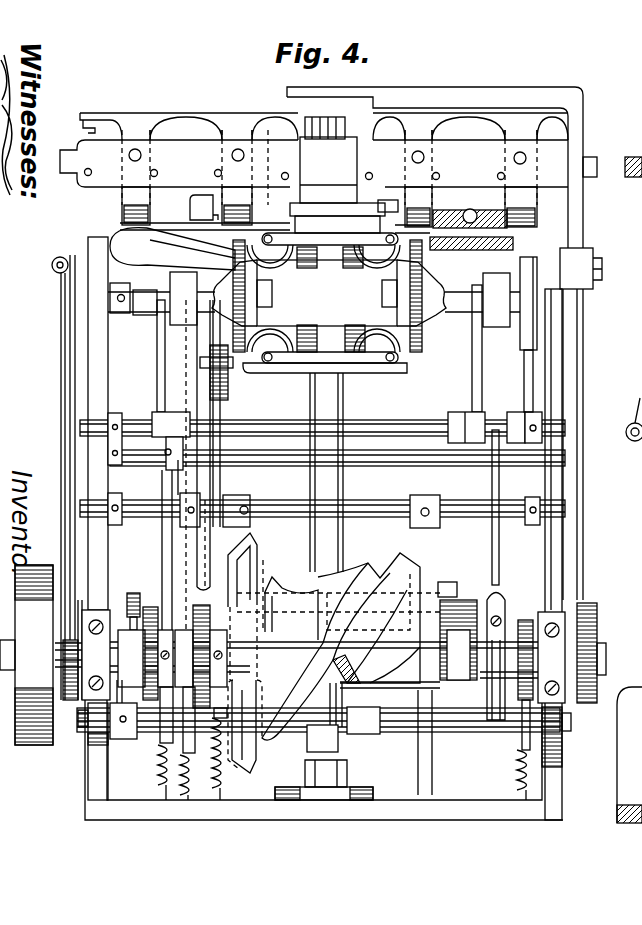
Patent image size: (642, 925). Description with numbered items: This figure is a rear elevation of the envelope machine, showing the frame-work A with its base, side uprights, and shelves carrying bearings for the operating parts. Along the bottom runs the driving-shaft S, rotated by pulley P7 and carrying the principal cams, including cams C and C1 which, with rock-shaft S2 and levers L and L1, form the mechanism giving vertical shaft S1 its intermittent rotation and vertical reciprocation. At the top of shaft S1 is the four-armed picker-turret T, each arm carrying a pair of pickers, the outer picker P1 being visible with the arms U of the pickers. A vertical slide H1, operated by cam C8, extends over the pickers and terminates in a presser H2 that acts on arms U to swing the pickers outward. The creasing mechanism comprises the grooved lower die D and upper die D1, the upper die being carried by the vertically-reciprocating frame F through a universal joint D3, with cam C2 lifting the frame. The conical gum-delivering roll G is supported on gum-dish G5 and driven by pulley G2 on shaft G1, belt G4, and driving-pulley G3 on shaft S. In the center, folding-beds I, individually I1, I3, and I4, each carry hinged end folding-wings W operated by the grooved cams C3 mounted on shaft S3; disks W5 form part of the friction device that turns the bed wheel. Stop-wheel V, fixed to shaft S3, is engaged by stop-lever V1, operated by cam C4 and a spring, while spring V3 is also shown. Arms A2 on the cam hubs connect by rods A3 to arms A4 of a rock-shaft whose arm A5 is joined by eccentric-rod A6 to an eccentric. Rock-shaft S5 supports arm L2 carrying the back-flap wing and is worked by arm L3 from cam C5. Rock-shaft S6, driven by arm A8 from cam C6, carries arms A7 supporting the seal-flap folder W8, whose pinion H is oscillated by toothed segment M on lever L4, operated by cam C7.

The vertical slide H1 is at (583, 103).
The presser H2 is at (283, 100).
The arms of the pickers U is at (205, 110).
The upper die D1 is at (510, 215).
The picker-turret T is at (314, 175).
The end folding-wing W is at (314, 238).
The outer picker P1 is at (337, 207).
The vertically-reciprocating frame F is at (323, 397).
The universal joint D3 is at (470, 210).
The lower die D is at (515, 243).
The folding-bed I1 is at (330, 237).
The folding-bed I3 is at (451, 358).
The folding-bed I4 is at (323, 298).
The disks W5 is at (305, 330).
The toothed segment M is at (243, 415).
The cams C3 is at (233, 328).
The arm L2 is at (325, 467).
The oscillating seal-flap folder W8 is at (403, 373).
The pinion H is at (228, 368).
The gum-delivering roll G is at (172, 249).
The gum-dish G5 is at (125, 273).
The pulley G2 is at (55, 260).
The shaft of the gum roll G1 is at (56, 270).
The belt G4 is at (68, 390).
The driving-pulley G3 is at (73, 702).
The frame-work A is at (357, 529).
The rock-shaft S5 is at (80, 428).
The lever L4 is at (222, 482).
The rock-shaft S6 is at (82, 512).
The arms A7 is at (178, 486).
The intermittently-rotating shaft S3 is at (85, 298).
The arms A2 is at (406, 299).
The rods A3 is at (157, 356).
The arms of rock-shaft A4 is at (175, 412).
The arm A5 is at (514, 412).
The stop-wheel V is at (530, 327).
The stop-lever V1 is at (530, 402).
The folding-bed I is at (612, 299).
The arm A8 is at (185, 550).
The arm L3 is at (165, 585).
The eccentric-rod A6 is at (492, 532).
The pulley P7 is at (26, 655).
The driving-shaft S is at (14, 638).
The cam C1 is at (96, 655).
The cam C5 is at (150, 730).
The cam C6 is at (250, 677).
The lever L1 is at (122, 740).
The cam C is at (258, 553).
The cam C7 is at (225, 648).
The cam C2 is at (458, 640).
The cam C4 is at (551, 657).
The cam C8 is at (600, 633).
The lever L is at (371, 748).
The vertical shaft S1 is at (340, 748).
The rock-shaft S2 is at (562, 732).
The spring V3 is at (535, 780).